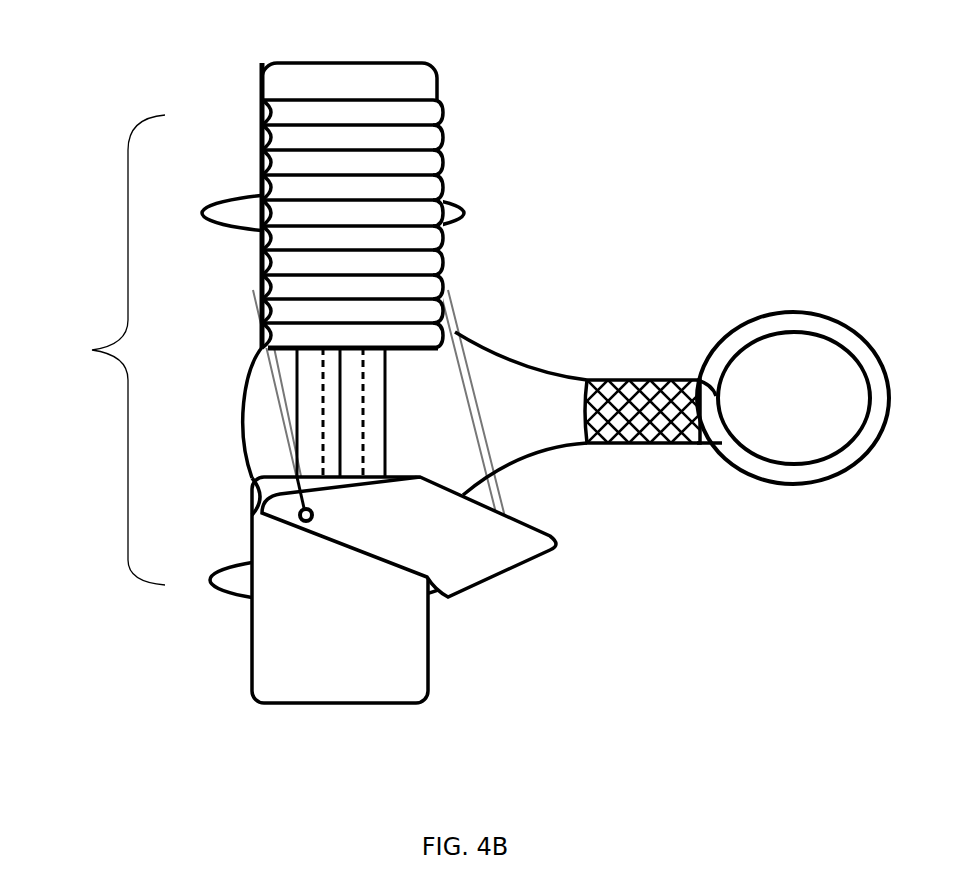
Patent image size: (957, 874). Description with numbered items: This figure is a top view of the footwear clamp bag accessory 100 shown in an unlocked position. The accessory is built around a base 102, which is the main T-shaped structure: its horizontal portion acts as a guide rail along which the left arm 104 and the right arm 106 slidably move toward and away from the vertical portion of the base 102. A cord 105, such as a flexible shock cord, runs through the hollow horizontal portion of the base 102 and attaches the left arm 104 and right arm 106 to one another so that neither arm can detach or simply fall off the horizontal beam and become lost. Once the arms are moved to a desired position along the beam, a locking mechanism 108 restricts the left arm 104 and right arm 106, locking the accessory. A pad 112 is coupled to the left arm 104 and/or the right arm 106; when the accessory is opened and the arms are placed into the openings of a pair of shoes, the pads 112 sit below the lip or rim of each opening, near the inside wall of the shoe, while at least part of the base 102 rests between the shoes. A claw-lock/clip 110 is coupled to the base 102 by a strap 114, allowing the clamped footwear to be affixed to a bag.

The footwear clamp bag accessory 100 is at (217, 58).
The base 102 is at (388, 417).
The left arm 104 is at (342, 55).
The cord 105 is at (318, 433).
The right arm 106 is at (343, 705).
The locking mechanism 108 is at (101, 350).
The claw-lock/clip 110 is at (782, 306).
The pad 112 is at (212, 192).
The strap 114 is at (625, 367).